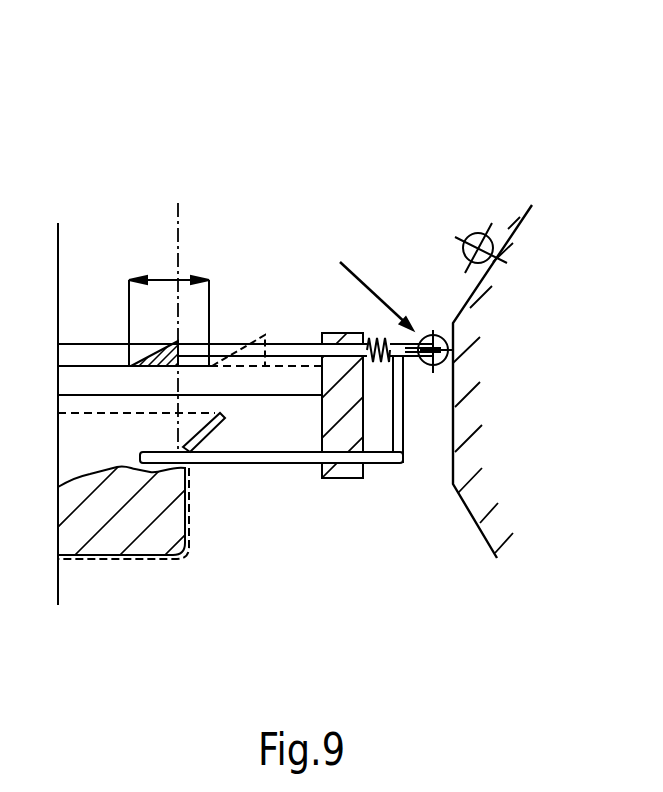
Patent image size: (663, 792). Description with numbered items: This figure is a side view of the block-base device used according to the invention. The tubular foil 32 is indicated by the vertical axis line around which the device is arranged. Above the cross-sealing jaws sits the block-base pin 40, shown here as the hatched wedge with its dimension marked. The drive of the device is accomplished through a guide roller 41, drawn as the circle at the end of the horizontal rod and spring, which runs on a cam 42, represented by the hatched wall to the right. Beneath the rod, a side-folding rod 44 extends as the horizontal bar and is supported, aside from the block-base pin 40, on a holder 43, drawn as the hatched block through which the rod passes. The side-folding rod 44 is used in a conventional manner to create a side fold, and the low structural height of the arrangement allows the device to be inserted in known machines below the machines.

The block-base pin 40 is at (158, 352).
The tubular foil 32 is at (167, 262).
The guide roller 41 is at (425, 334).
The cam 42 is at (455, 326).
The holder 43 is at (333, 468).
The side-folding rod 44 is at (218, 457).